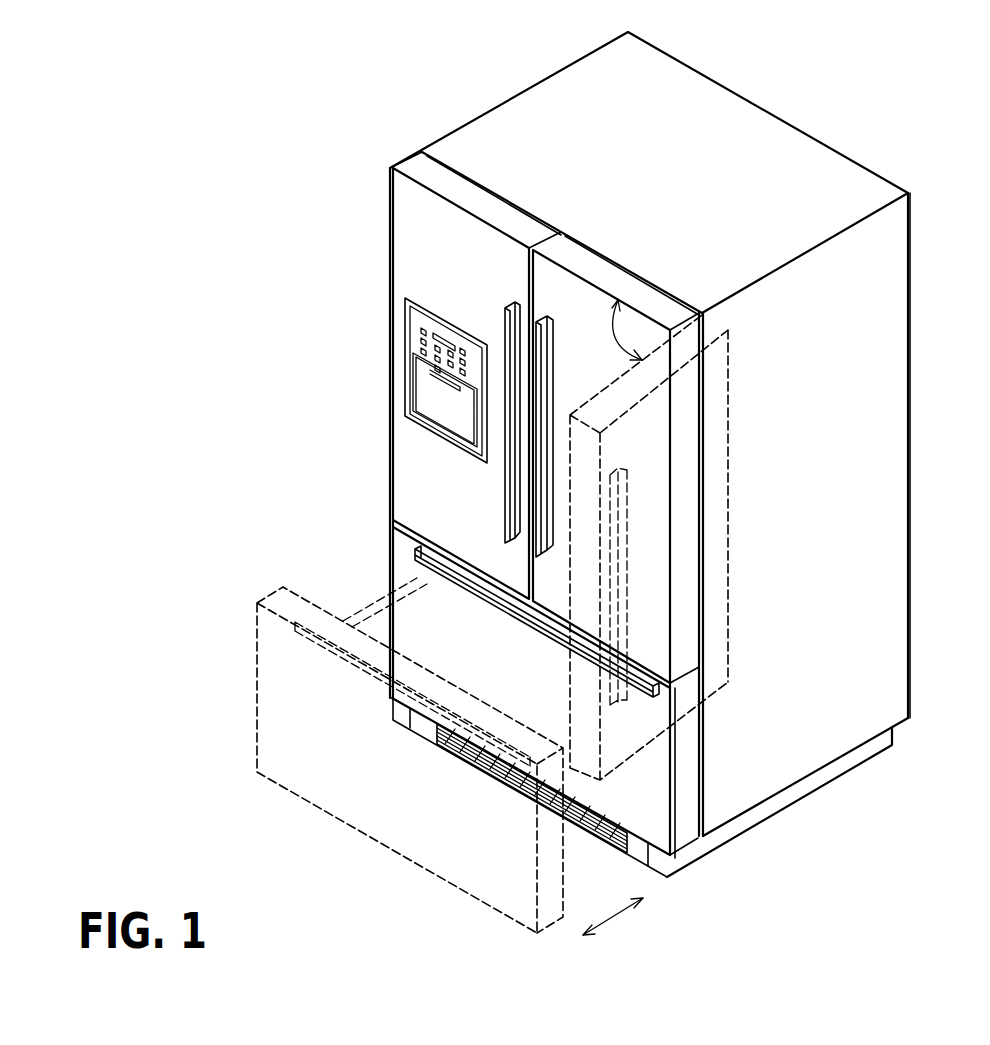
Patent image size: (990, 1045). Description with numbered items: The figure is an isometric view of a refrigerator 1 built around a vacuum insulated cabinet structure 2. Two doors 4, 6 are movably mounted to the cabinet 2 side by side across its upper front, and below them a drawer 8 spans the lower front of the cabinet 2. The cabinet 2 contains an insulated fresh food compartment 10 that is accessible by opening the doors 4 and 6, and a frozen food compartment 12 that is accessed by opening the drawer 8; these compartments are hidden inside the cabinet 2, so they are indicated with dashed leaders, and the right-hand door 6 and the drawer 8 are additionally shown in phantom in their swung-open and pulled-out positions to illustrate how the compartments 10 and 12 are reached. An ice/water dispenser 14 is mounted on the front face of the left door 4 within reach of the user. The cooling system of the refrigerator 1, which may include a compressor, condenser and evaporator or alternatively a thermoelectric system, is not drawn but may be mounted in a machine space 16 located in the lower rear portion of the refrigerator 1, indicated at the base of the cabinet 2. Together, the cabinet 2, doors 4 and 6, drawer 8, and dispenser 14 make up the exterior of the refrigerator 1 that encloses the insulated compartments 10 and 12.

The refrigerator 1 is at (857, 132).
The vacuum insulated cabinet structure 2 is at (893, 378).
The door 4 is at (400, 245).
The door 6 is at (660, 592).
The drawer 8 is at (663, 812).
The fresh food compartment 10 is at (818, 312).
The frozen food compartment 12 is at (753, 787).
The ice/water dispenser 14 is at (407, 353).
The machine space 16 is at (910, 692).